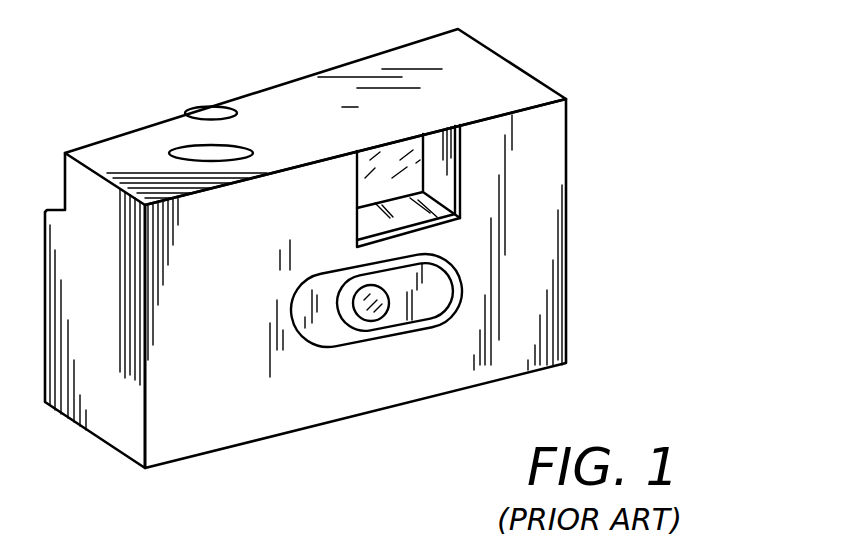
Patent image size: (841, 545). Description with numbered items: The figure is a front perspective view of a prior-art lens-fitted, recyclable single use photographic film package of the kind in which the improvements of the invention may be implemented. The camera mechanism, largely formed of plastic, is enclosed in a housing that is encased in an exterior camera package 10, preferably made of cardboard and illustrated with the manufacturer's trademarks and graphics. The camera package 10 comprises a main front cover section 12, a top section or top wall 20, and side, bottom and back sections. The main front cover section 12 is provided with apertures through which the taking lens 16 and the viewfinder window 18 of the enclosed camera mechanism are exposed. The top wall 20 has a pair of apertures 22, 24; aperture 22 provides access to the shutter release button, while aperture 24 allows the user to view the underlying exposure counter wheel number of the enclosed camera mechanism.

The camera package 10 is at (326, 399).
The main front cover section 12 is at (206, 437).
The taking lens 16 is at (376, 322).
The viewfinder window 18 is at (386, 158).
The top wall 20 is at (500, 73).
The aperture 22 is at (191, 152).
The aperture 24 is at (220, 110).